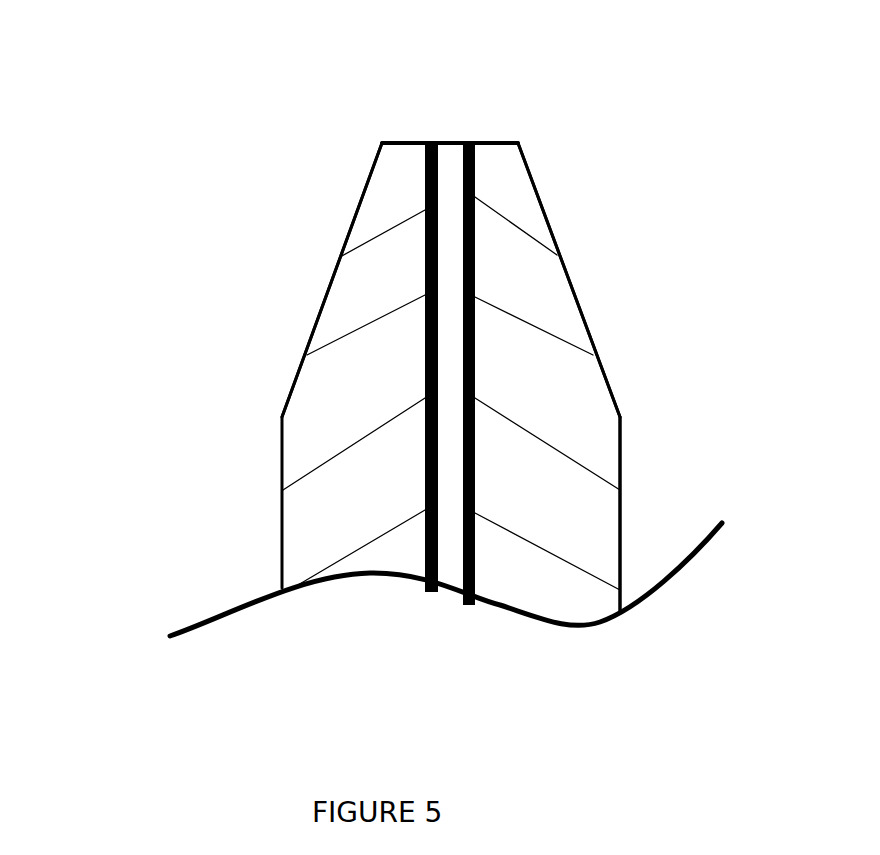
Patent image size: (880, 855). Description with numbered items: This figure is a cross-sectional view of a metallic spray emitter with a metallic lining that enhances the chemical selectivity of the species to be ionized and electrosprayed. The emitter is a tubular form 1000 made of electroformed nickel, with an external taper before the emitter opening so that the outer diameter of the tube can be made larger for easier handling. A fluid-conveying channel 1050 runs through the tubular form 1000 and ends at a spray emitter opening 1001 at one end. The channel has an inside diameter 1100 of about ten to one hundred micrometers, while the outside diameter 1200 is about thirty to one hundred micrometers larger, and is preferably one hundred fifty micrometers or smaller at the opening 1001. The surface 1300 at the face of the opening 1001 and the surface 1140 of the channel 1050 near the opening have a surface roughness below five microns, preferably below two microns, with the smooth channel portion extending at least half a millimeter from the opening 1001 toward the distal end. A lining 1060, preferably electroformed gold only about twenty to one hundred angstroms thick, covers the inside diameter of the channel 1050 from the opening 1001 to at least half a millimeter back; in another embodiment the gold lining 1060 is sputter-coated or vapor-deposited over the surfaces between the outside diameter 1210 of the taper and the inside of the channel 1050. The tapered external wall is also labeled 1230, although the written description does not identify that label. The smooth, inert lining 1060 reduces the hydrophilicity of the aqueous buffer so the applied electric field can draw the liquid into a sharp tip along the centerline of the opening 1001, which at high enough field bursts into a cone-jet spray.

The tubular form 1000 is at (235, 146).
The spray emitter opening 1001 is at (452, 130).
The fluid-conveying channel 1050 is at (450, 212).
The lining 1060 is at (470, 137).
The inside diameter 1100 is at (466, 360).
The surface of the fluidic channel 1140 is at (440, 170).
The outside diameter 1200 is at (623, 462).
The outside diameter of the taper 1210 is at (520, 138).
The tapered side wall 1230 is at (340, 258).
The surface at the face of the spray emitter opening 1300 is at (397, 140).